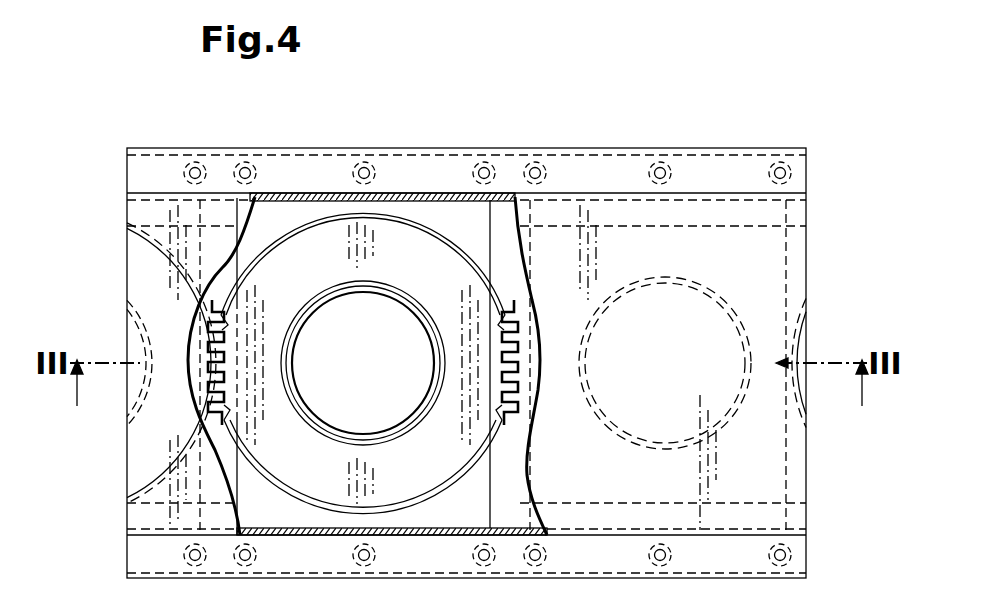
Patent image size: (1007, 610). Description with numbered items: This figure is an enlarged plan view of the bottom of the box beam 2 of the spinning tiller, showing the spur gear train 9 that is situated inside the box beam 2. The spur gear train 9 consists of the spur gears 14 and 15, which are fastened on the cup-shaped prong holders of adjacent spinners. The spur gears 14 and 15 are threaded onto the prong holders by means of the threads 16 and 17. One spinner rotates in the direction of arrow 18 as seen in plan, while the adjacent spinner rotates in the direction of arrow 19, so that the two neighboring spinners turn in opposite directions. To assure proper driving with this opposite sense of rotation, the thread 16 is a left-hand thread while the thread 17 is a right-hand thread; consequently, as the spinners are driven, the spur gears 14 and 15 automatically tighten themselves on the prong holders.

The box beam 2 is at (153, 210).
The spur gear train 9 is at (122, 465).
The spur gear 14 is at (175, 258).
The spur gear 15 is at (425, 210).
The thread 16 is at (700, 295).
The thread 17 is at (403, 292).
The arrow 18 is at (770, 392).
The arrow 19 is at (478, 393).